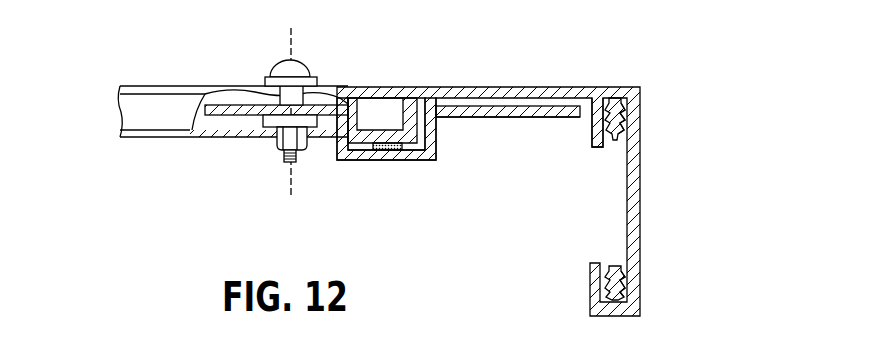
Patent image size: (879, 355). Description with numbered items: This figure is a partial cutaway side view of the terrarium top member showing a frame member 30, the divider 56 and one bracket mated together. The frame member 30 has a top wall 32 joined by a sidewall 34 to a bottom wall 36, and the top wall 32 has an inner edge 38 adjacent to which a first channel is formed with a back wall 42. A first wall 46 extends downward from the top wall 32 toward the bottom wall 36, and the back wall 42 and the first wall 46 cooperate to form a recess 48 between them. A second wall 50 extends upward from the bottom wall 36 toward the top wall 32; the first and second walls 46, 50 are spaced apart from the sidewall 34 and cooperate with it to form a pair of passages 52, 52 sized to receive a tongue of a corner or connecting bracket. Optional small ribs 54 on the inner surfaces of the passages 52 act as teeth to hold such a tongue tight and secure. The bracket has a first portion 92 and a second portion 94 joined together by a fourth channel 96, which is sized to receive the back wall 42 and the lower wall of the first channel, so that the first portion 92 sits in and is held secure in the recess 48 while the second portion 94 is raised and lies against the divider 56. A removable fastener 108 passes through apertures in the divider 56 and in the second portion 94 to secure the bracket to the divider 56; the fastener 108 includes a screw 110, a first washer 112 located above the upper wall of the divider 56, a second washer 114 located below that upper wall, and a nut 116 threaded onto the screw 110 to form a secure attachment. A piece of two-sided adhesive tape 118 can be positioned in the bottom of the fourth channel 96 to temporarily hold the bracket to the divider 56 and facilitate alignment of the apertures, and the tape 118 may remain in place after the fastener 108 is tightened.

The frame member 30 is at (684, 33).
The top wall 32 is at (503, 87).
The sidewall 34 is at (640, 198).
The bottom wall 36 is at (617, 317).
The inner edge 38 is at (355, 93).
The back wall 42 is at (420, 112).
The first wall 46 is at (592, 131).
The recess 48 is at (535, 121).
The second wall 50 is at (590, 287).
The passages 52 is at (612, 148).
The ribs 54 is at (613, 98).
The divider 56 is at (150, 85).
The first portion 92 is at (482, 118).
The second portion 94 is at (234, 116).
The fourth channel 96 is at (381, 162).
The fastener 108 is at (279, 122).
The screw 110 is at (284, 62).
The first washer 112 is at (265, 73).
The second washer 114 is at (268, 128).
The nut 116 is at (308, 150).
The adhesive tape 118 is at (399, 151).